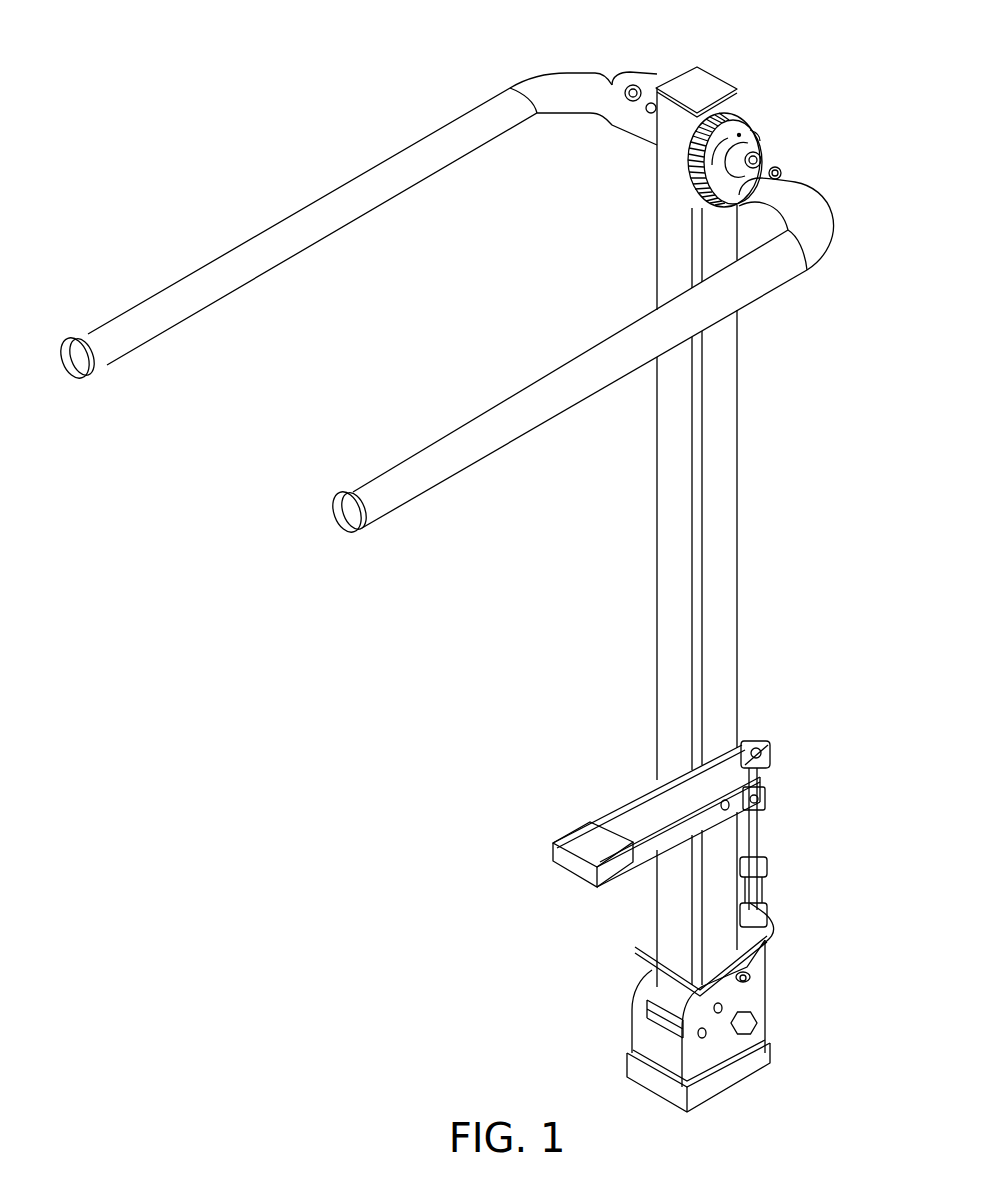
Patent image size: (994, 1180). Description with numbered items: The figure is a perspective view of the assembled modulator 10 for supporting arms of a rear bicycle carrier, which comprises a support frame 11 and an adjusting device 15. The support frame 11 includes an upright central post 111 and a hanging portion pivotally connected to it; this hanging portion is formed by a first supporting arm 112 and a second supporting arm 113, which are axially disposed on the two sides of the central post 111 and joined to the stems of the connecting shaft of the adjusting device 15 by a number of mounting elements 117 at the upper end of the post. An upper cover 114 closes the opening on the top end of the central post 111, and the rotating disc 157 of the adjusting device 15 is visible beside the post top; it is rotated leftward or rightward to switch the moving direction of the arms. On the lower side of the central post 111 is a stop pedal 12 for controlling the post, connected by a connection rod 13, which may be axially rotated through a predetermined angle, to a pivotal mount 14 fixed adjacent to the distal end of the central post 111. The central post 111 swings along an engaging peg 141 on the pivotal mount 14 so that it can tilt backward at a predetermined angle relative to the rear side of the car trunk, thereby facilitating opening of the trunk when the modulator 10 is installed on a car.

The modulator 10 is at (768, 357).
The support frame 11 is at (323, 525).
The central post 111 is at (665, 258).
The first supporting arm 112 is at (477, 140).
The second supporting arm 113 is at (553, 383).
The upper cover 114 is at (712, 76).
The mounting elements 117 is at (650, 102).
The stop pedal 12 is at (583, 830).
The connection rod 13 is at (770, 762).
The pivotal mount 14 is at (690, 1057).
The engaging peg 141 is at (752, 979).
The adjusting device 15 is at (758, 115).
The rotating disc 157 is at (682, 188).